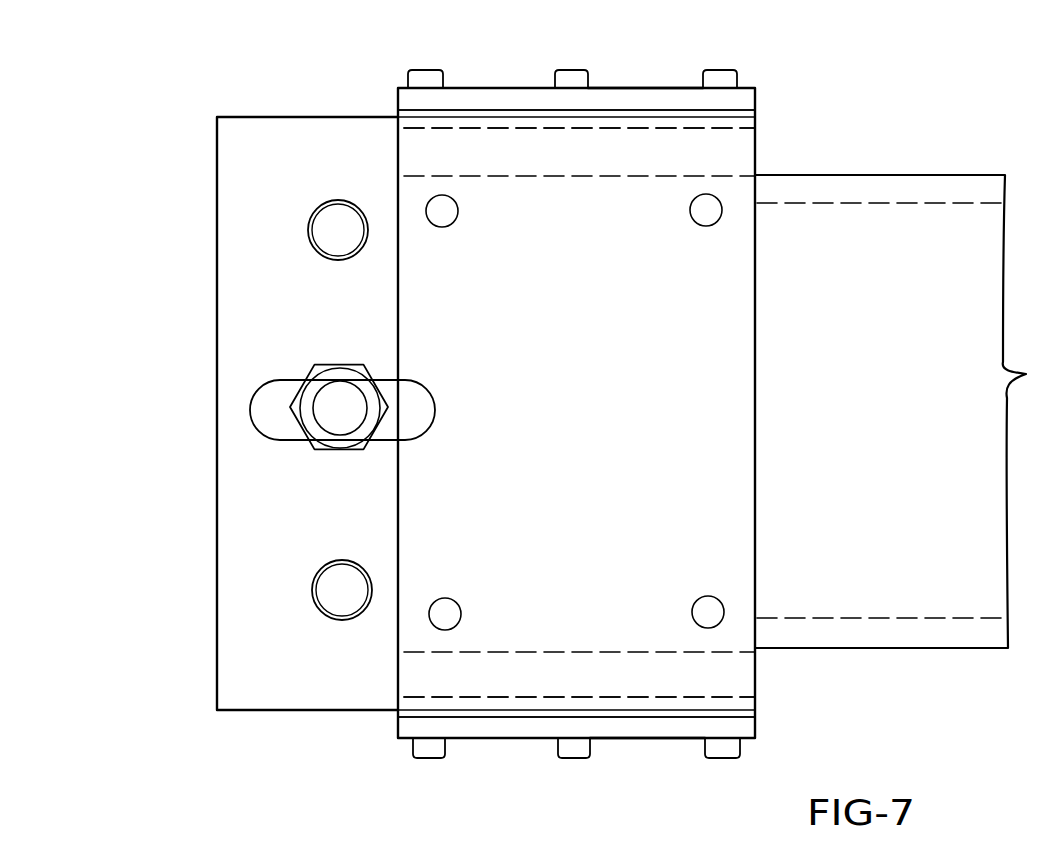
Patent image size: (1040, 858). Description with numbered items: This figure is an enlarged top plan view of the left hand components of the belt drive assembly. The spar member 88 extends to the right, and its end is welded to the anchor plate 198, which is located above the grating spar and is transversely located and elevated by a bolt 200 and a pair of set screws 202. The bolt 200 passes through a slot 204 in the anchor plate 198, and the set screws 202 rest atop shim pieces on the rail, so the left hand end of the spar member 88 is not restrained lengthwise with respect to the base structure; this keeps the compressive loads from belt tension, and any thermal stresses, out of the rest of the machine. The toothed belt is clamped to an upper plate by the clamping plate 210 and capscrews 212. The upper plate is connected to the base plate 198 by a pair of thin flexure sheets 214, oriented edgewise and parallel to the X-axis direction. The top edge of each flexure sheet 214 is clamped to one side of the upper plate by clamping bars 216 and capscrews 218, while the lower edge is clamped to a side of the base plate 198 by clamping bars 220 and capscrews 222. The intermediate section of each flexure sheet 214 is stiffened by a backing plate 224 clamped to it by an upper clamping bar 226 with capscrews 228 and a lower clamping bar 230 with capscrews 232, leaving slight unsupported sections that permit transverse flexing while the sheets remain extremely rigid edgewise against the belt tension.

The spar member 88 is at (864, 494).
The anchor plate 198 is at (245, 713).
The bolt 200 is at (313, 447).
The set screws 202 is at (310, 216).
The slot 204 is at (272, 388).
The clamping plate 210 is at (537, 398).
The capscrews 212 is at (726, 608).
The flexure sheets 214 is at (757, 116).
The clamping bars 216 is at (685, 63).
The capscrews 218 is at (407, 77).
The clamping bars 220 is at (688, 776).
The capscrews 222 is at (573, 68).
The backing plate 224 is at (408, 122).
The upper clamping bar 226 is at (667, 62).
The capscrews 228 is at (738, 80).
The lower clamping bar 230 is at (640, 740).
The capscrews 232 is at (473, 780).